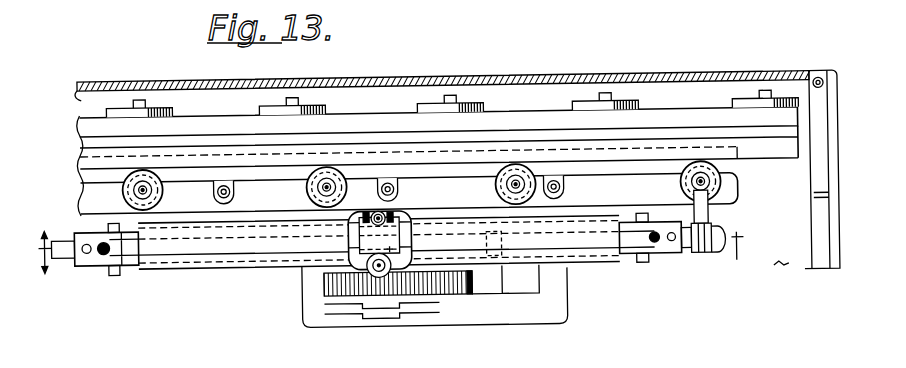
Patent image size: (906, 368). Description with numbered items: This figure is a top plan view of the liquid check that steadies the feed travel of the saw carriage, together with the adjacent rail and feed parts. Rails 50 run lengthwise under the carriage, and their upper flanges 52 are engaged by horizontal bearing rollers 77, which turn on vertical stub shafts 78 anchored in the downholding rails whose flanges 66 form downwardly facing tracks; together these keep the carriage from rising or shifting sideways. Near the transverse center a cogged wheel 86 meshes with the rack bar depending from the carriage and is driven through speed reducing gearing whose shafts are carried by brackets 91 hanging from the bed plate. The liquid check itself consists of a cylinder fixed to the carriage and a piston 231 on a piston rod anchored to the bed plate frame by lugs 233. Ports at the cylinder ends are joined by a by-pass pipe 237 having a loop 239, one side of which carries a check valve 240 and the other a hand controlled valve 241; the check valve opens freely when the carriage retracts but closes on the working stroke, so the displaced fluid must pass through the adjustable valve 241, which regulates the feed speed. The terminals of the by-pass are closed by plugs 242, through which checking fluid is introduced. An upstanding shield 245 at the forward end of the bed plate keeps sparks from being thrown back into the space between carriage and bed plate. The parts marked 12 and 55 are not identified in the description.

The direction of carriage movement arrow 12 is at (48, 268).
The rails 50 is at (782, 133).
The flanges 52 is at (668, 107).
The stop blocks 55 is at (572, 103).
The flanges 66 is at (630, 170).
The horizontal bearing rollers 77 is at (556, 196).
The vertical stub shafts 78 is at (140, 193).
The cogged wheel 86 is at (455, 293).
The brackets 91 is at (420, 327).
The piston 231 is at (597, 262).
The lugs 233 is at (705, 216).
The by-pass pipe 237 is at (213, 247).
The loop 239 is at (398, 222).
The check valve 240 is at (373, 214).
The hand controlled valve 241 is at (363, 270).
The plugs 242 is at (102, 255).
The upstanding shield 245 is at (810, 104).